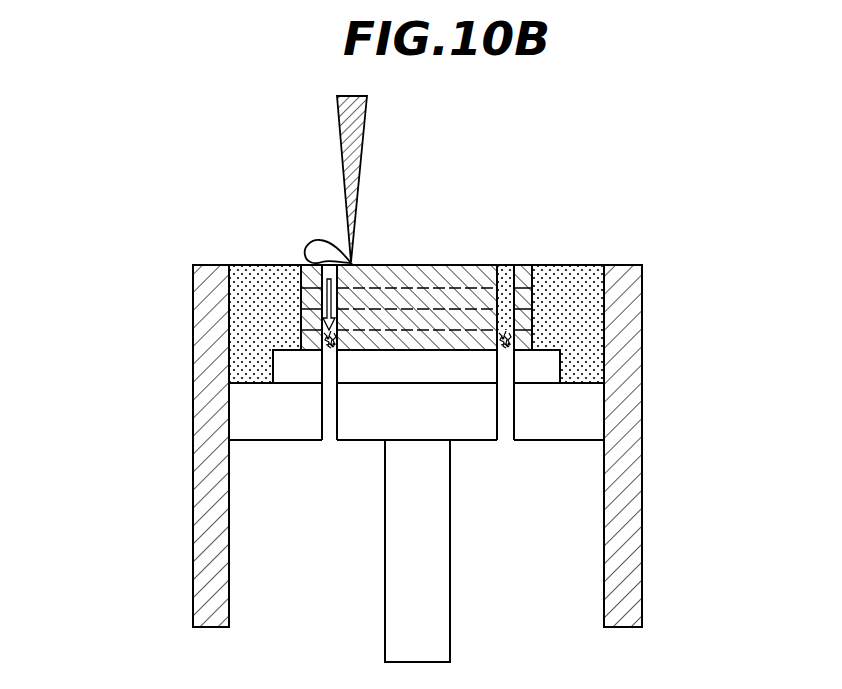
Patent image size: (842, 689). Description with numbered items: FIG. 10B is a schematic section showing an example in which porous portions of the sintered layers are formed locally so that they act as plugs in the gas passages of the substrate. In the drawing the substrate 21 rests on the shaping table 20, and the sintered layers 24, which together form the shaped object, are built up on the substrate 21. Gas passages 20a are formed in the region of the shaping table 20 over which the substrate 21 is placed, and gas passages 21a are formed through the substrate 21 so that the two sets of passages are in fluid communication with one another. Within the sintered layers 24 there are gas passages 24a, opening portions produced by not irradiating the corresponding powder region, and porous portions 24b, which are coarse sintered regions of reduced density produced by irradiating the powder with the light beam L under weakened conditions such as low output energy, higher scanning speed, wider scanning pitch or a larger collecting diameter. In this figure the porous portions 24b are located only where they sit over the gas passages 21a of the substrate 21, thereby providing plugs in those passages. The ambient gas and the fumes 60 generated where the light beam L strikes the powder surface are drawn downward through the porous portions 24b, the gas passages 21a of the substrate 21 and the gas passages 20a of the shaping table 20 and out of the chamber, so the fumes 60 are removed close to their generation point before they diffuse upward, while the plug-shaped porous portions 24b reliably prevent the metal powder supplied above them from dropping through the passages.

The shaping table 20 is at (582, 412).
The gas passages of the shaping table 20a is at (325, 423).
The substrate 21 is at (553, 365).
The gas passages of the substrate 21a is at (325, 365).
The sintered layers 24 is at (443, 292).
The gas passages of the sintered layers 24a is at (507, 300).
The porous portions of the sintered layers 24b is at (317, 340).
The fumes 60 is at (318, 240).
The light beam L is at (360, 155).